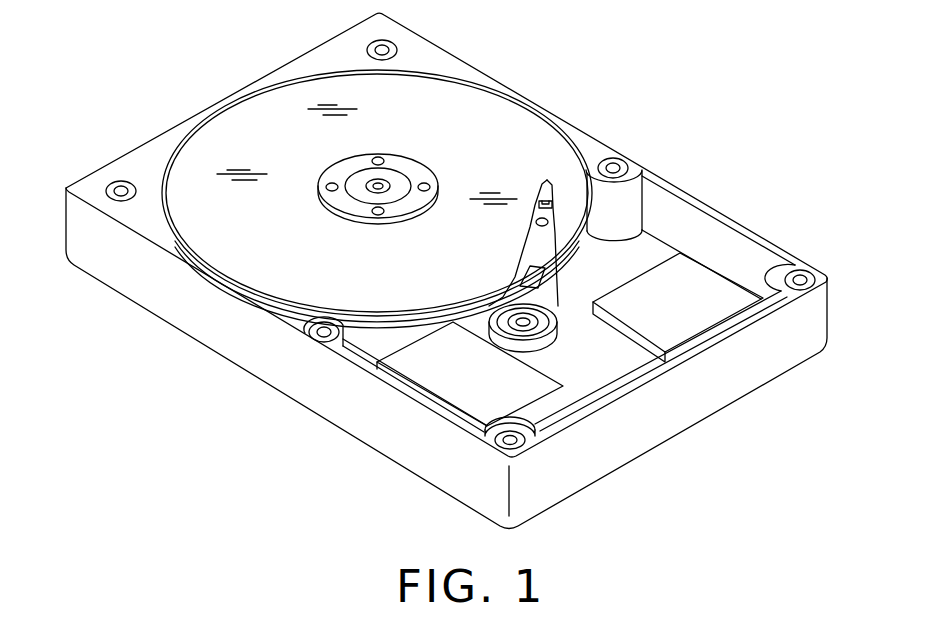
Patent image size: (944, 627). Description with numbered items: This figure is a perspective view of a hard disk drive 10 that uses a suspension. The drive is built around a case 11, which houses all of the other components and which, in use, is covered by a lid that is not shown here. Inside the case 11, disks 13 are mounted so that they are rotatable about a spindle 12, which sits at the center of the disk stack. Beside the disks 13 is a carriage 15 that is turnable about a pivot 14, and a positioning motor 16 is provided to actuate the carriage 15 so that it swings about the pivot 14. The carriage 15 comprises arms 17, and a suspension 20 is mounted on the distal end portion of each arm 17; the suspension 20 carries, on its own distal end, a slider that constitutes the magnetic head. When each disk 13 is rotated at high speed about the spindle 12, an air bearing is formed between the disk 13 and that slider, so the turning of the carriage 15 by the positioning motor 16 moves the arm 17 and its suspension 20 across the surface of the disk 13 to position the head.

The hard disk drive 10 is at (724, 90).
The case 11 is at (252, 362).
The spindle 12 is at (392, 173).
The disks 13 is at (487, 120).
The pivot 14 is at (528, 332).
The carriage 15 is at (585, 262).
The positioning motor 16 is at (452, 397).
The arm 17 is at (549, 222).
The suspension 20 is at (551, 288).